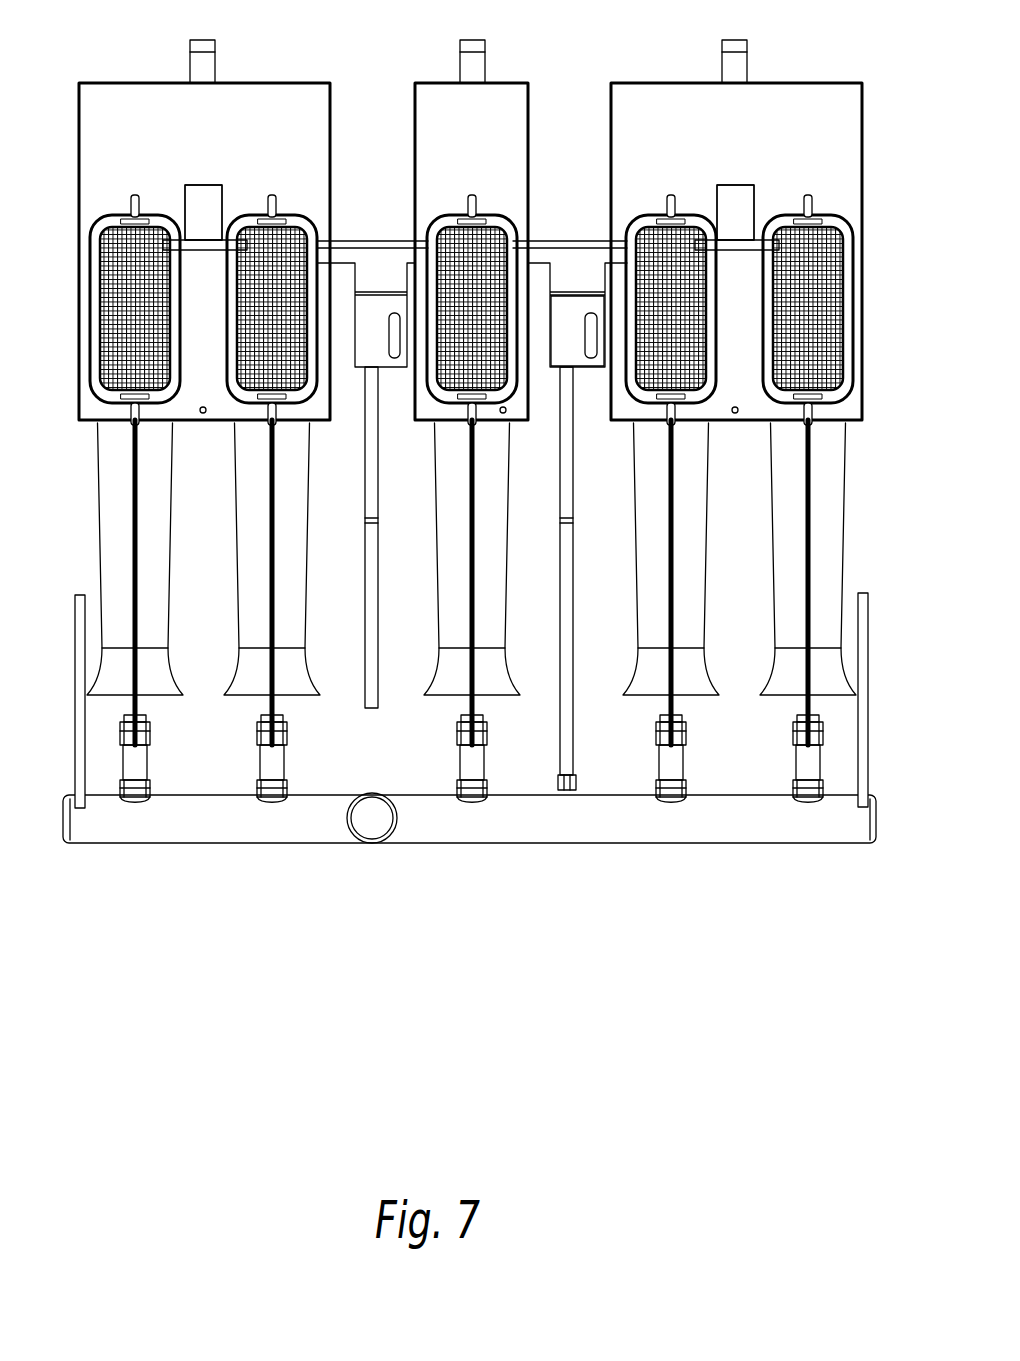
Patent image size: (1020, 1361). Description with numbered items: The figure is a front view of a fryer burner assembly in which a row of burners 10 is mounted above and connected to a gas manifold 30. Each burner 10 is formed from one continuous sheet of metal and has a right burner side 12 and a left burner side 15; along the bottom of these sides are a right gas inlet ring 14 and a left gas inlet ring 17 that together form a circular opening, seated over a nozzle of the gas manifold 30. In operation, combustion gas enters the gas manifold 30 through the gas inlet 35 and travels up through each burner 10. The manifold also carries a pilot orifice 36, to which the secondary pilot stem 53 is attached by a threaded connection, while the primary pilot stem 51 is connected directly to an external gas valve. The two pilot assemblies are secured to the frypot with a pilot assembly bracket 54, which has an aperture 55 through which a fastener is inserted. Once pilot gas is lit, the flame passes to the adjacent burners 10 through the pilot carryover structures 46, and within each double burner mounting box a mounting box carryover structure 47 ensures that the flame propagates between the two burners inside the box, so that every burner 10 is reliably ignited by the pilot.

The burner 10 is at (455, 658).
The right burner side 12 is at (458, 557).
The right gas inlet ring 14 is at (456, 736).
The left burner side 15 is at (485, 556).
The left gas inlet ring 17 is at (488, 740).
The gas manifold 30 is at (773, 845).
The gas inlet 35 is at (371, 845).
The pilot orifice 36 is at (577, 792).
The pilot carryover structure 46 is at (384, 262).
The mounting box carryover structure 47 is at (207, 185).
The primary pilot stem 51 is at (362, 683).
The secondary pilot stem 53 is at (573, 760).
The pilot assembly bracket 54 is at (574, 350).
The aperture 55 is at (593, 343).